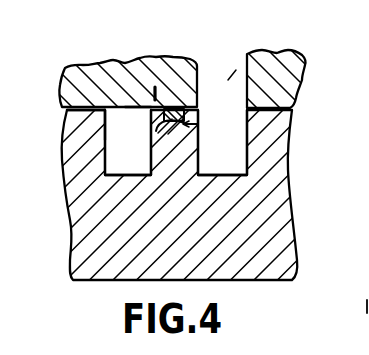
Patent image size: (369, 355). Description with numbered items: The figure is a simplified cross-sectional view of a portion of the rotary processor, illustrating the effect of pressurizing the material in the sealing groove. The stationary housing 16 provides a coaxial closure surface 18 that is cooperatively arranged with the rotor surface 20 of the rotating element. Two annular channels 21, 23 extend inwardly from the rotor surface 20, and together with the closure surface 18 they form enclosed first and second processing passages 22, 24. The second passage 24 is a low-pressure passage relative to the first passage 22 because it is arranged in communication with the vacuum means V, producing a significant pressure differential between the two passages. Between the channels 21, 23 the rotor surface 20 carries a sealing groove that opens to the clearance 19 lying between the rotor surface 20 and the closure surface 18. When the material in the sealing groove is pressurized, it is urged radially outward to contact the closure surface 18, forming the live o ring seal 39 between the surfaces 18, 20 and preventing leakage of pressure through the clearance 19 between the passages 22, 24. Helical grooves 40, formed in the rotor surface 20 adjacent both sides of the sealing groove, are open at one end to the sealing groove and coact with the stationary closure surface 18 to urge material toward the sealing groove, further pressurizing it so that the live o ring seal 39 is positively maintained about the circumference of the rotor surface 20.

The housing 16 is at (77, 75).
The closure surface 18 is at (72, 110).
The clearance 19 is at (138, 100).
The rotor surface 20 is at (72, 133).
The annular channel 21 is at (134, 161).
The first processing passage 22 is at (118, 121).
The annular channel 23 is at (230, 161).
The second processing passage 24 is at (240, 127).
The live o ring seal 39 is at (171, 113).
The helical grooves 40 is at (183, 124).
The vacuum means V is at (228, 80).